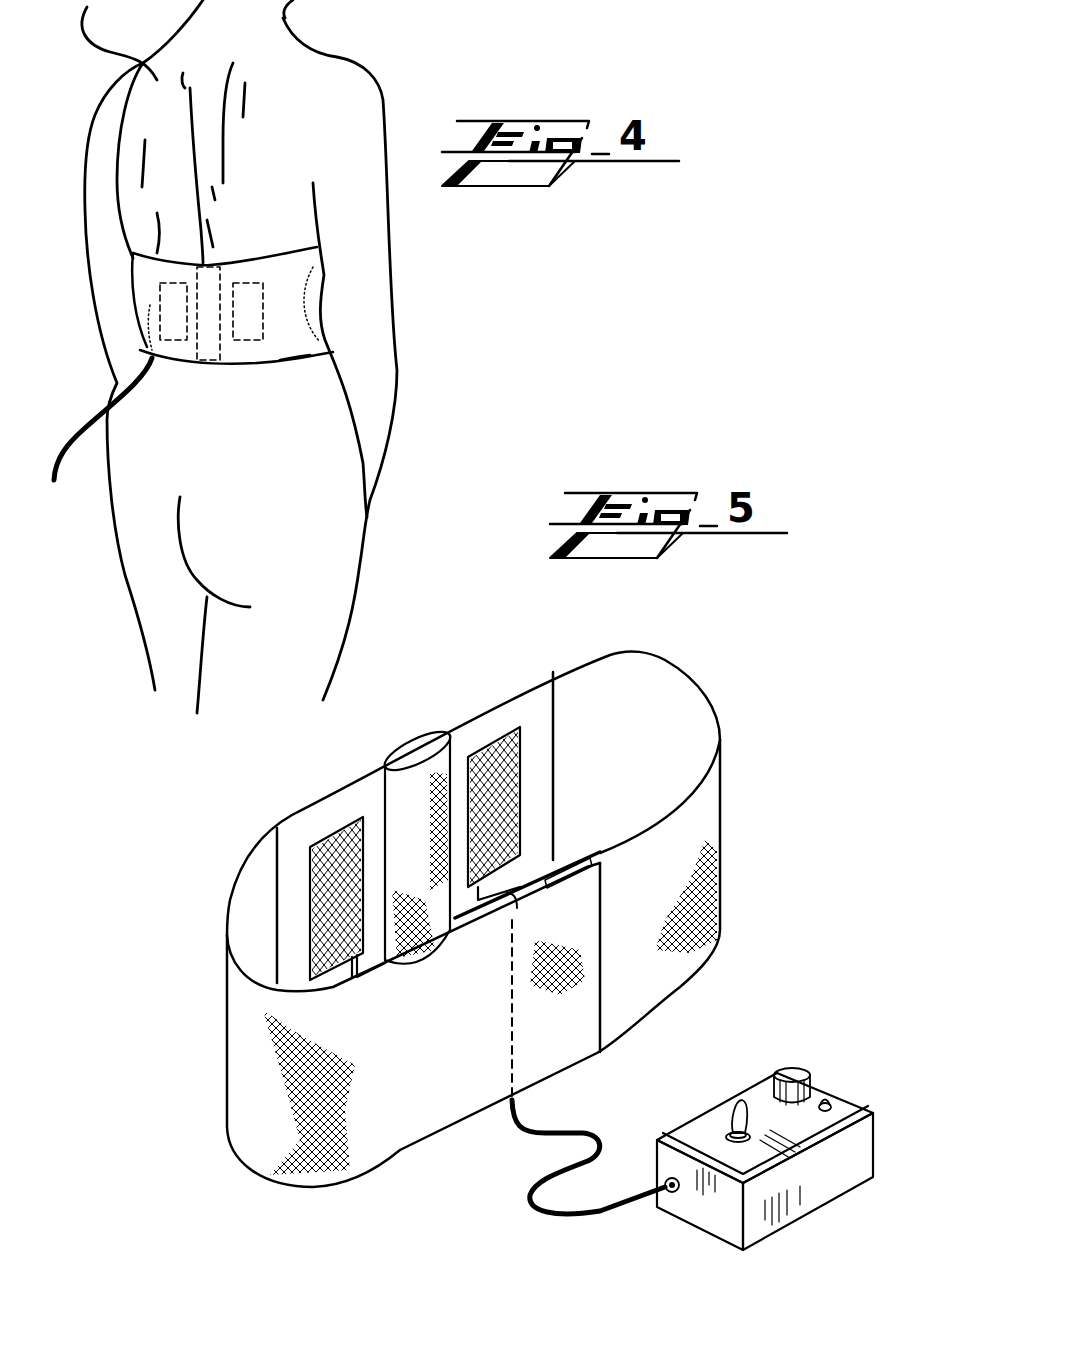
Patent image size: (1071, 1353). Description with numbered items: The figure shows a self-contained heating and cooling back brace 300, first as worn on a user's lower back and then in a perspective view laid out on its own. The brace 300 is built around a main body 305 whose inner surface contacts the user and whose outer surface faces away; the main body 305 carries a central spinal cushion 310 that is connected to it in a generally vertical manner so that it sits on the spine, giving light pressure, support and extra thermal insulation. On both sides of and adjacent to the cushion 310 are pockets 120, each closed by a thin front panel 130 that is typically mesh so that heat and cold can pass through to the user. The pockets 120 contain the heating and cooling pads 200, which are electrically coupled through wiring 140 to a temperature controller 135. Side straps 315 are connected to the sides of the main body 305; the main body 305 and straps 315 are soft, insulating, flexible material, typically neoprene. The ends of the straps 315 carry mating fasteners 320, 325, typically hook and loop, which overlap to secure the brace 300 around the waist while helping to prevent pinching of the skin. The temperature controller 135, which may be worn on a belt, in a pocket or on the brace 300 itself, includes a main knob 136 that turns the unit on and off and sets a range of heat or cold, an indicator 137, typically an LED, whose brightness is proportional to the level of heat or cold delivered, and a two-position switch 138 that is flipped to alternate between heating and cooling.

In FIG. 4, the heating and cooling pads 200 is at (160, 313).
In FIG. 4, the self-contained heating and cooling back brace 300 is at (318, 265).
In FIG. 5, the self-contained heating and cooling back brace 300 is at (192, 964).
In FIG. 4, the main body 305 is at (295, 348).
In FIG. 5, the main body 305 is at (487, 714).
In FIG. 4, the central spinal cushion 310 is at (202, 360).
In FIG. 5, the central spinal cushion 310 is at (433, 740).
In FIG. 4, the wiring 140 is at (85, 436).
In FIG. 5, the wiring 140 is at (523, 1200).
In FIG. 5, the pockets 120 is at (307, 877).
In FIG. 5, the front panel 130 is at (328, 907).
In FIG. 5, the side straps 315 is at (243, 1065).
In FIG. 5, the fastener 320 is at (580, 888).
In FIG. 5, the fastener 325 is at (587, 892).
In FIG. 5, the temperature controller 135 is at (827, 1190).
In FIG. 5, the main knob 136 is at (790, 1070).
In FIG. 5, the indicator 137 is at (825, 1103).
In FIG. 5, the two-position switch 138 is at (738, 1105).